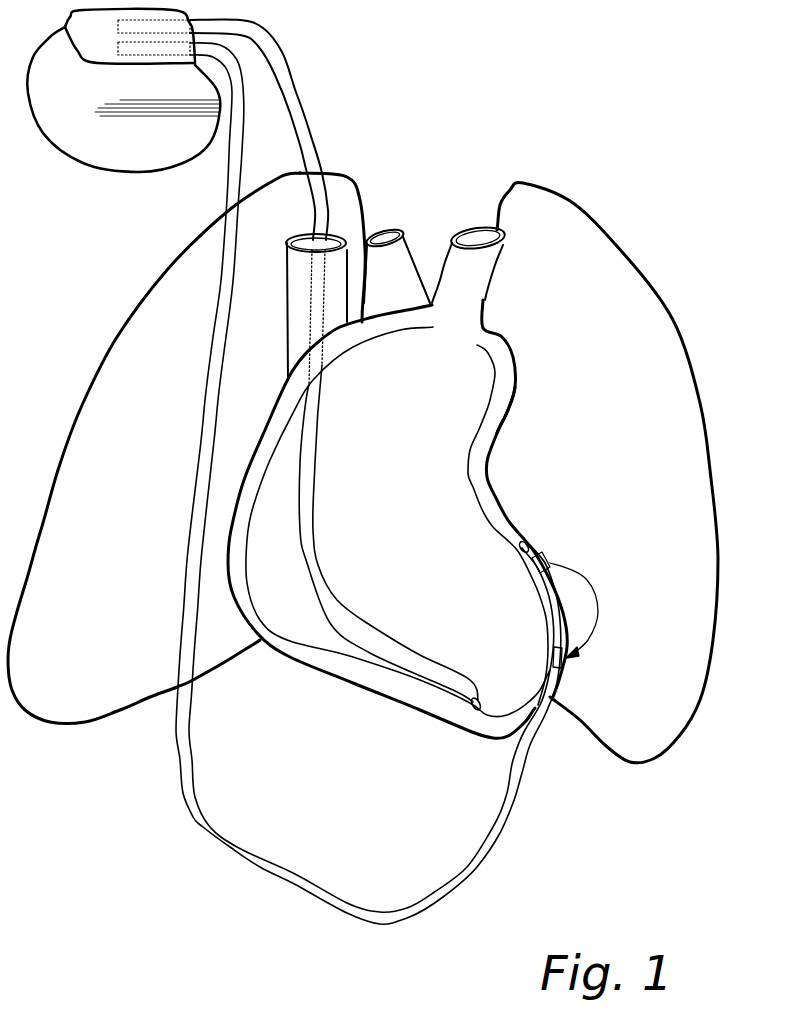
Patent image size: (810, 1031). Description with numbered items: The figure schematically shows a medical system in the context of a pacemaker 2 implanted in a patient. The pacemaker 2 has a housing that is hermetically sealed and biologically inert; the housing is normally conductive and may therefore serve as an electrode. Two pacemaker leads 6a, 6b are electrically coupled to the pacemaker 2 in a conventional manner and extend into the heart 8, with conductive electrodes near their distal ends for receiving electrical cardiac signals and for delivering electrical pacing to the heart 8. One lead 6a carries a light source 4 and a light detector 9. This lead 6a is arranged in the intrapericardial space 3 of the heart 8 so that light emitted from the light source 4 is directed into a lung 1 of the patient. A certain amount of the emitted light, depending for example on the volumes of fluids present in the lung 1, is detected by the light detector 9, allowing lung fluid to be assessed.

The lung 1 is at (672, 457).
The pacemaker 2 is at (68, 130).
The intrapericardial space 3 is at (502, 360).
The light source 4 is at (543, 558).
The lead 6a is at (368, 483).
The lead 6b is at (336, 366).
The heart 8 is at (512, 400).
The light detector 9 is at (577, 667).